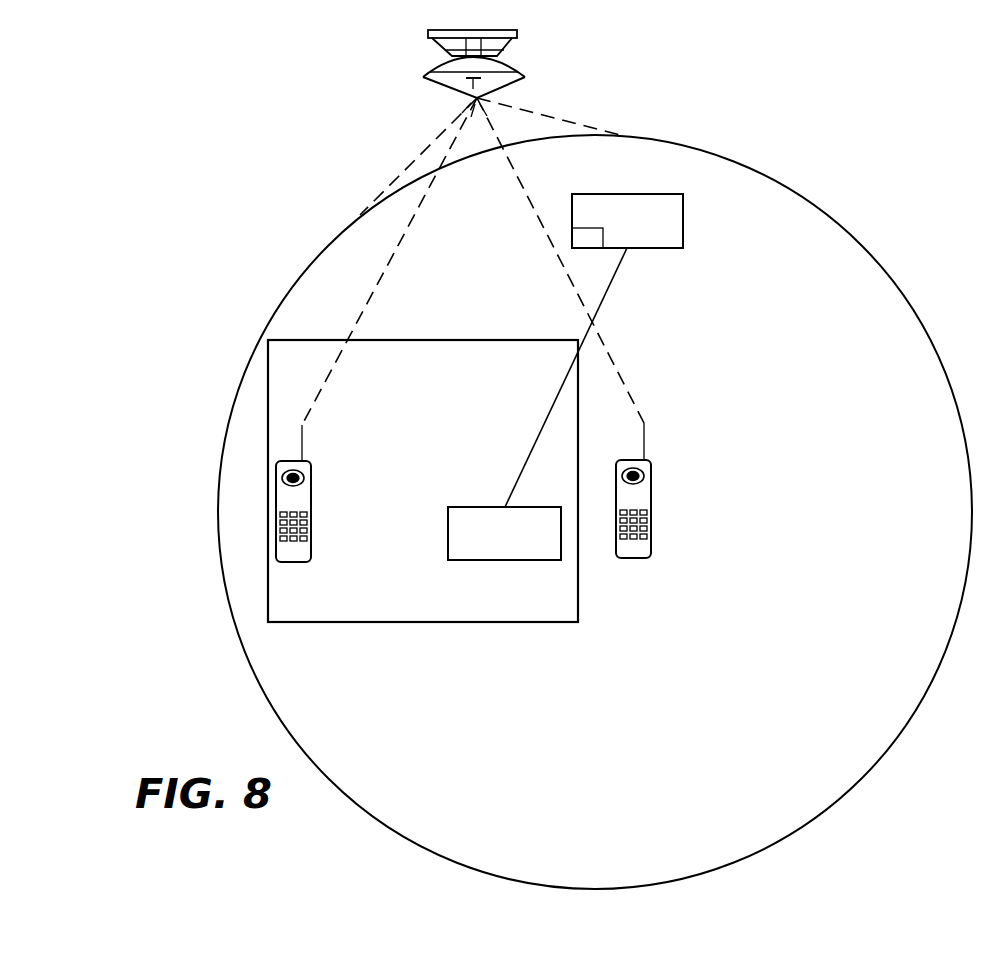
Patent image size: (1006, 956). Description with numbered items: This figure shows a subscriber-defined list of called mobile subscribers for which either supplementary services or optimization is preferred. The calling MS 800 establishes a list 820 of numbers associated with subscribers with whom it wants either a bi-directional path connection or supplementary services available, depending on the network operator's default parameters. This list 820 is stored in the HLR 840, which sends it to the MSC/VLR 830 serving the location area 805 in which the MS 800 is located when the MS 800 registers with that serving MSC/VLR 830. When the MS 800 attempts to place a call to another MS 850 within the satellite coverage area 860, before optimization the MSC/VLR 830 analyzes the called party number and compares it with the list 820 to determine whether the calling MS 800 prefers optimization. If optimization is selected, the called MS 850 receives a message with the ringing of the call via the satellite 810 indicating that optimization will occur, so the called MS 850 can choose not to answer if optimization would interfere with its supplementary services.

The calling MS 800 is at (311, 557).
The location area 805 is at (568, 617).
The satellite 810 is at (508, 47).
The list 820 is at (583, 250).
The MSC/VLR 830 is at (470, 507).
The HLR 840 is at (621, 194).
The called MS 850 is at (651, 553).
The satellite coverage area 860 is at (595, 512).